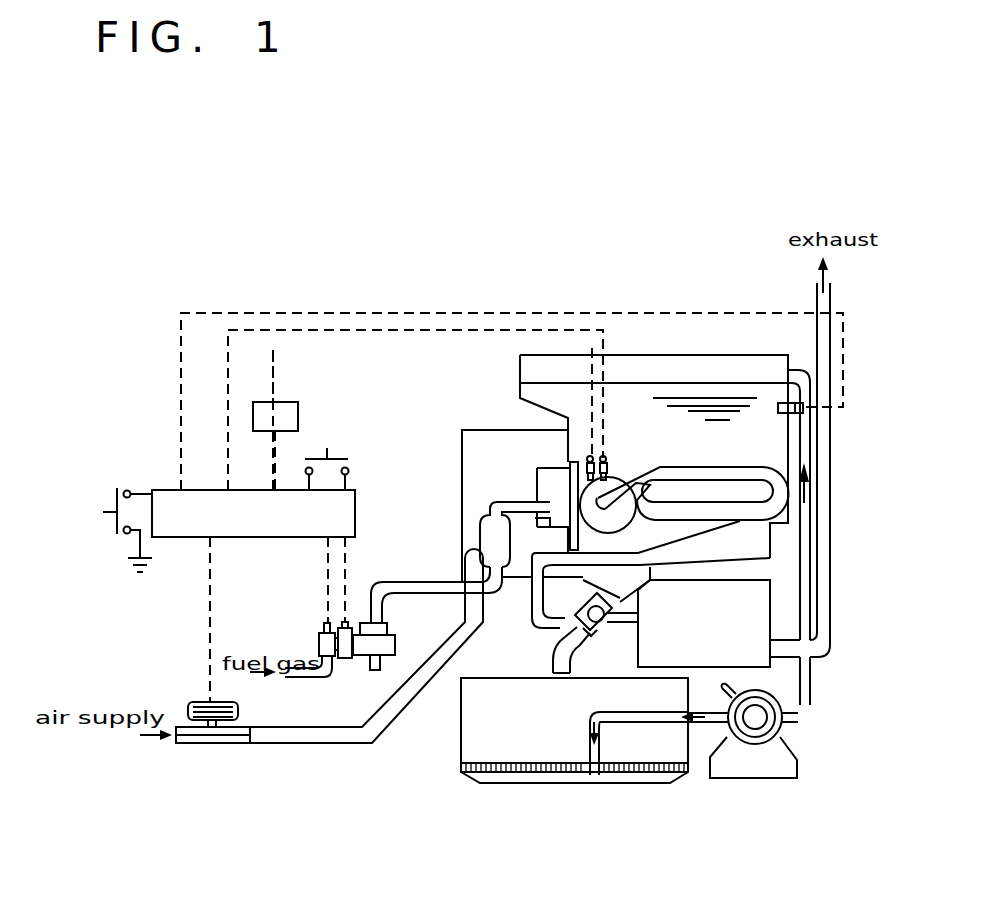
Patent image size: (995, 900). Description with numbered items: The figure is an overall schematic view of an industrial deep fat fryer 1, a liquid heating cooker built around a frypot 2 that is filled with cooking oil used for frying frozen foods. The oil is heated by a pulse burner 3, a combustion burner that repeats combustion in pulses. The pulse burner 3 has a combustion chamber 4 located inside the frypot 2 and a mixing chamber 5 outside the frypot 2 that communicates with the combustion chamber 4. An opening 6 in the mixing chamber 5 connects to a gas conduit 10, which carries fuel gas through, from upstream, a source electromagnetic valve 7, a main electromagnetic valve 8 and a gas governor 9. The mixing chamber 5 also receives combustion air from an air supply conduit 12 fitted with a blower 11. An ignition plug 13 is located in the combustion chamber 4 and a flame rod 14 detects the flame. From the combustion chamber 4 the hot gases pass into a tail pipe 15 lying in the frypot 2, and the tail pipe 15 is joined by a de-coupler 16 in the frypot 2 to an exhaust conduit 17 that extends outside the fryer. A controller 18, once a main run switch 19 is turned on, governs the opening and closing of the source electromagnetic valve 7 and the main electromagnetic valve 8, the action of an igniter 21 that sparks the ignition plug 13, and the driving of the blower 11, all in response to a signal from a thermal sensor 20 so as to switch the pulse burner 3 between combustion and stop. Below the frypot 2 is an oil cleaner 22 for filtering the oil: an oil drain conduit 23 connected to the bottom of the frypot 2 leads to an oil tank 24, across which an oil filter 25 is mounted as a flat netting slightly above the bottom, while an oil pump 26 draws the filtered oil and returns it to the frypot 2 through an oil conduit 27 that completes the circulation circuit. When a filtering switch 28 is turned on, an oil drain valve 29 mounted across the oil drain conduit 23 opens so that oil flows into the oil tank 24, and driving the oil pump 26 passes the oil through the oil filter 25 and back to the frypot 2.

The industrial deep fat fryer 1 is at (549, 300).
The frypot 2 is at (706, 365).
The pulse burner 3 is at (543, 452).
The combustion chamber 4 is at (628, 478).
The mixing chamber 5 is at (540, 482).
The opening 6 is at (540, 498).
The source electromagnetic valve 7 is at (323, 631).
The main electromagnetic valve 8 is at (345, 648).
The gas governor 9 is at (395, 642).
The gas conduit 10 is at (407, 583).
The blower 11 is at (195, 703).
The air supply conduit 12 is at (350, 745).
The ignition plug 13 is at (586, 458).
The flame rod 14 is at (605, 455).
The tail pipe 15 is at (760, 468).
The de-coupler 16 is at (762, 620).
The exhaust conduit 17 is at (823, 531).
The controller 18 is at (167, 495).
The main run switch 19 is at (117, 498).
The thermal sensor 20 is at (770, 400).
The igniter 21 is at (298, 412).
The oil cleaner 22 is at (806, 730).
The oil drain conduit 23 is at (552, 660).
The oil tank 24 is at (477, 730).
The oil filter 25 is at (521, 775).
The oil pump 26 is at (755, 728).
The oil conduit 27 is at (806, 690).
The filtering switch 28 is at (328, 458).
The oil drain valve 29 is at (600, 624).